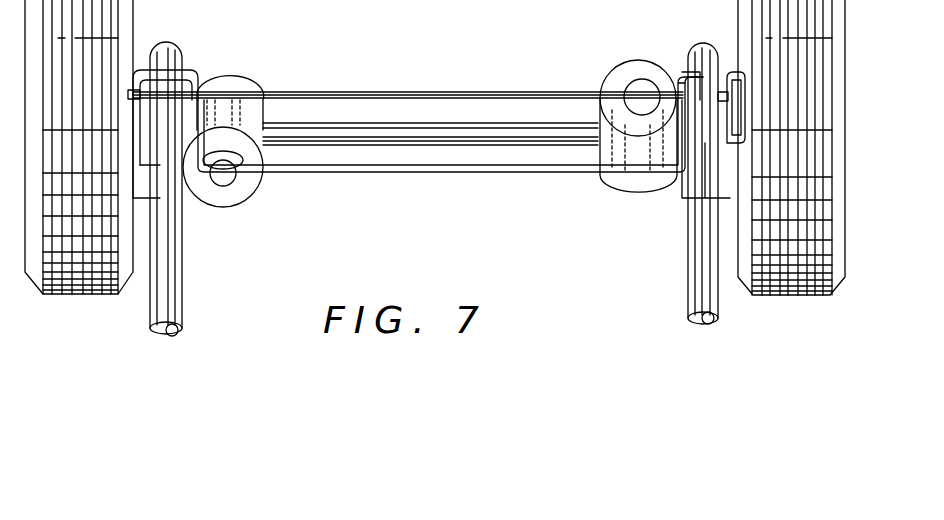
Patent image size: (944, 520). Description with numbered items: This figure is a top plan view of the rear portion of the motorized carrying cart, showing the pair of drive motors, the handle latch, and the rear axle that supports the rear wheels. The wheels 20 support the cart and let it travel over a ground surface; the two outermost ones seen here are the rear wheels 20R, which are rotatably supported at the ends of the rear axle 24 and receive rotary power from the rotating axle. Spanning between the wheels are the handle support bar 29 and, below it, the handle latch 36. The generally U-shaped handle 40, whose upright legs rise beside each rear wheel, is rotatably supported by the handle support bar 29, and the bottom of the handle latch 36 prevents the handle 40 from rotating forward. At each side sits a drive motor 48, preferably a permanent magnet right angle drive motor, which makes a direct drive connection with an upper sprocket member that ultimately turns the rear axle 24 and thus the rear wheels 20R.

The wheels 20 is at (90, 195).
The rear wheels 20R is at (76, 283).
The rear axle 24 is at (367, 133).
The handle support bar 29 is at (330, 93).
The handle latch 36 is at (360, 167).
The handle 40 is at (185, 268).
The drive motor 48 is at (256, 82).